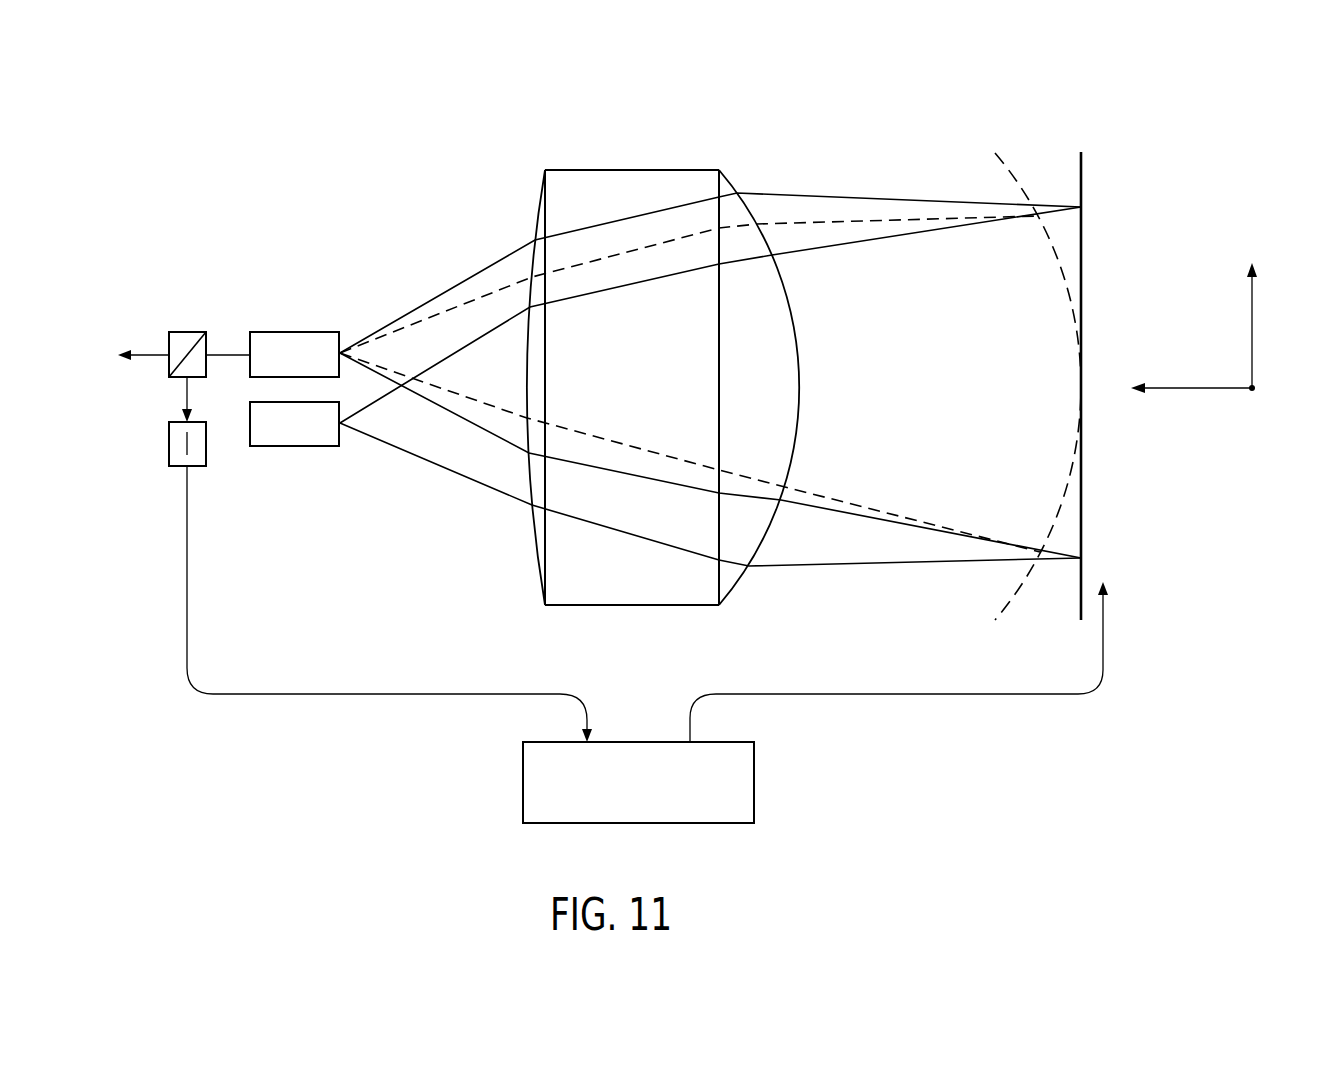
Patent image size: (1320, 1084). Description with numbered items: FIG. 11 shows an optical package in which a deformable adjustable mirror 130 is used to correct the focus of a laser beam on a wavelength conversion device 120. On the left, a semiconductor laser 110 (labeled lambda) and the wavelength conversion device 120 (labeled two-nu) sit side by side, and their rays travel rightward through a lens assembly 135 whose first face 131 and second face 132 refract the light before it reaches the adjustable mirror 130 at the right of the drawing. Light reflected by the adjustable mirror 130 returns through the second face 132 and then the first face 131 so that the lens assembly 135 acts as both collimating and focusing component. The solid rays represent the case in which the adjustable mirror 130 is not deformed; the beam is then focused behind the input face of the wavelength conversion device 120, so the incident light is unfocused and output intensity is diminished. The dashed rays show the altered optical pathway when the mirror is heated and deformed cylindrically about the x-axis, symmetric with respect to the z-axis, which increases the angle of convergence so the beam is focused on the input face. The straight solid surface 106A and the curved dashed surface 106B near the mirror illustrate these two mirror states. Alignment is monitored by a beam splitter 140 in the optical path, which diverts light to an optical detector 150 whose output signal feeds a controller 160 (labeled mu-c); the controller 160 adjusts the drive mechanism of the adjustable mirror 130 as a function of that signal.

The first focal surface 106A is at (1081, 160).
The second focal surface 106B is at (1005, 176).
The semiconductor laser 110 is at (293, 446).
The wavelength conversion device 120 is at (293, 332).
The adjustable mirror 130 is at (699, 451).
The first face 131 is at (536, 215).
The second face 132 is at (729, 180).
The lens assembly 135 is at (690, 607).
The beam splitter 140 is at (187, 332).
The optical detector 150 is at (197, 467).
The controller 160 is at (523, 782).